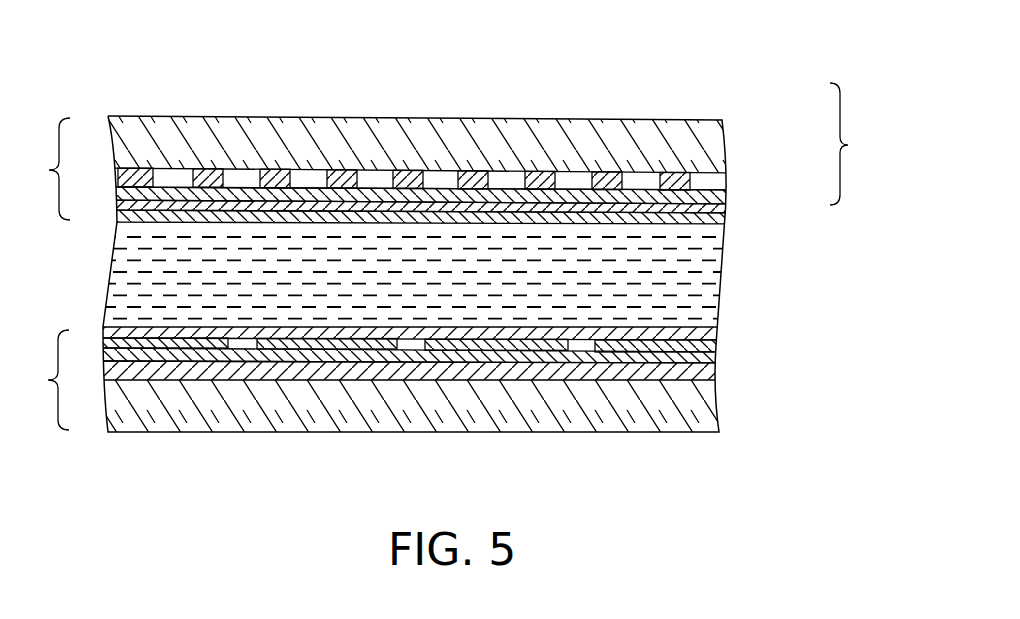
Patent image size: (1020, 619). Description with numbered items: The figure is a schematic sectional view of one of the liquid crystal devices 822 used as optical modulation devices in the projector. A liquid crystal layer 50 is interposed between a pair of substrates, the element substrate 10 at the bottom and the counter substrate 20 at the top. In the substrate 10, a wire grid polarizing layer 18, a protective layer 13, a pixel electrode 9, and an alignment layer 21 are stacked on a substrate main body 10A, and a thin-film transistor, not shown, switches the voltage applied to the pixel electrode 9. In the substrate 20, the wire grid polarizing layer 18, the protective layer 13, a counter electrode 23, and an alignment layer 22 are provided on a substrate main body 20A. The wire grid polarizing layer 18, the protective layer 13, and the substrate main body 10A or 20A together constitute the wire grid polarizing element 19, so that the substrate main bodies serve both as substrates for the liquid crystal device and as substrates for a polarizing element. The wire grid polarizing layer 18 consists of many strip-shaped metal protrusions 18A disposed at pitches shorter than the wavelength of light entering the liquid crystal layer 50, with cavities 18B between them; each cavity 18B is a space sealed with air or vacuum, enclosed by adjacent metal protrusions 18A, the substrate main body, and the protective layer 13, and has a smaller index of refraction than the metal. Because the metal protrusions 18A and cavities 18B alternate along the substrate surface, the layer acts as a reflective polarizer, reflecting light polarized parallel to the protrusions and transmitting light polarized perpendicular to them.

The liquid crystal device 822 is at (744, 99).
The substrate main body 20A is at (725, 132).
The metal protrusion 18A is at (726, 157).
The wire grid polarizing layer 18 is at (727, 182).
The cavity 18B is at (578, 178).
The protective layer 13 is at (727, 197).
The wire grid polarizing element 19 is at (857, 144).
The counter electrode 23 is at (726, 209).
The alignment layer 22 is at (725, 219).
The liquid crystal layer 50 is at (723, 282).
The alignment layer 21 is at (719, 334).
The pixel electrode 9 is at (719, 346).
The substrate main body 10A is at (717, 412).
The counter substrate 20 is at (43, 169).
The element substrate 10 is at (43, 380).